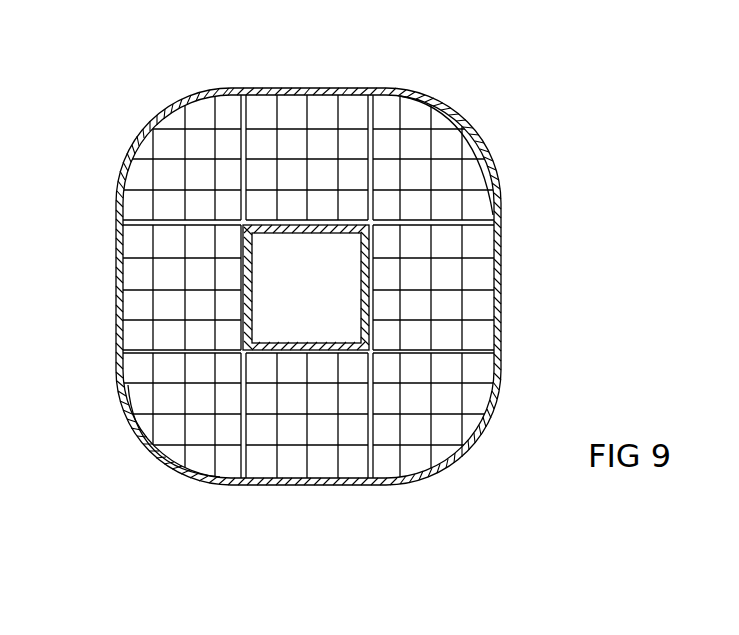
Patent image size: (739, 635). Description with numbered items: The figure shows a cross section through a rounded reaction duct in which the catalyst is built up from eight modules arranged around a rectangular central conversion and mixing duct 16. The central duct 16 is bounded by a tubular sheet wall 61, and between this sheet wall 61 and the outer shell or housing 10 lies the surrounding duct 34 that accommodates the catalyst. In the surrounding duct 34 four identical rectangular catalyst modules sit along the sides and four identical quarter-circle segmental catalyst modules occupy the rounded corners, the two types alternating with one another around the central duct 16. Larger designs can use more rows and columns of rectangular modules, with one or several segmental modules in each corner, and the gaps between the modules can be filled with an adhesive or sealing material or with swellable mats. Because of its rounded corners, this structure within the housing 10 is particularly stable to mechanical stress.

The shell or housing 10 is at (490, 177).
The central duct 16 is at (321, 275).
The surrounding duct 34 is at (498, 305).
The tubular sheet wall 61 is at (338, 345).